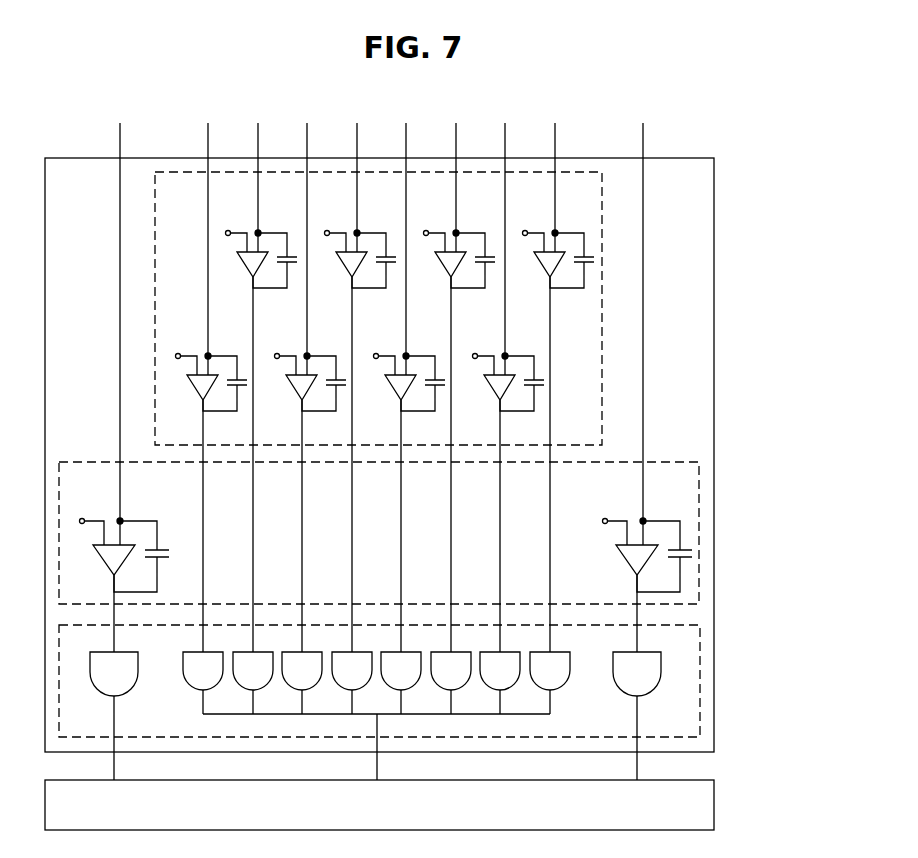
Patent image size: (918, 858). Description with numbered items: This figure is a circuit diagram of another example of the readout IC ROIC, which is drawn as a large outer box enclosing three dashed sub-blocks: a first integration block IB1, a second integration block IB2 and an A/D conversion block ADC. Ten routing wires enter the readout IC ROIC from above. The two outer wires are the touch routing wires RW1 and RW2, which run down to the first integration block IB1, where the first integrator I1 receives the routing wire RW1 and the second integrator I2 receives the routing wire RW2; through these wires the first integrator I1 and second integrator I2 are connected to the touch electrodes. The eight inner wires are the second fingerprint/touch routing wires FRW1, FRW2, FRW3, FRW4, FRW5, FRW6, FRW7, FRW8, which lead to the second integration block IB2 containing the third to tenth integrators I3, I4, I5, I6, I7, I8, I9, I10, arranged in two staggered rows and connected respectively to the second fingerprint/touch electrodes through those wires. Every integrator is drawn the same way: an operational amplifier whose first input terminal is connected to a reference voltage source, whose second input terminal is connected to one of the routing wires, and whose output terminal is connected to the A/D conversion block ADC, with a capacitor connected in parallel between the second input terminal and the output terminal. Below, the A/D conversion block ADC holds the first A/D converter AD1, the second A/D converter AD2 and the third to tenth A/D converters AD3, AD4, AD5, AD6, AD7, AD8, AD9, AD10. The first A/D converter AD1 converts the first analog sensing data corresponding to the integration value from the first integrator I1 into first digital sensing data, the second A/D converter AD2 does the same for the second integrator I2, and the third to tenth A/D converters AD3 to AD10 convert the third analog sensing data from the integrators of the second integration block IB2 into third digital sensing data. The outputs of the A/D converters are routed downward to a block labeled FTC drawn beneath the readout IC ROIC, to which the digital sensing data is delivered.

The readout IC ROIC is at (714, 198).
The first integration block IB1 is at (699, 541).
The second integration block IB2 is at (602, 372).
The A/D conversion block ADC is at (700, 688).
The fingerprint touch controller FTC is at (379, 805).
The 2-1 routing wire RW1 is at (120, 324).
The 2-1 routing wire RW2 is at (643, 324).
The second fingerprint/touch routing wire FRW1 is at (208, 239).
The second fingerprint/touch routing wire FRW2 is at (258, 177).
The second fingerprint/touch routing wire FRW3 is at (307, 239).
The second fingerprint/touch routing wire FRW4 is at (357, 177).
The second fingerprint/touch routing wire FRW5 is at (406, 239).
The second fingerprint/touch routing wire FRW6 is at (456, 177).
The second fingerprint/touch routing wire FRW7 is at (505, 239).
The second fingerprint/touch routing wire FRW8 is at (555, 177).
The first integrator I1 is at (153, 510).
The second integrator I2 is at (617, 511).
The third integrator I3 is at (196, 348).
The fourth integrator I4 is at (246, 225).
The fifth integrator I5 is at (295, 348).
The sixth integrator I6 is at (345, 225).
The seventh integrator I7 is at (394, 348).
The eighth integrator I8 is at (444, 225).
The ninth integrator I9 is at (493, 348).
The tenth integrator I10 is at (543, 225).
The first A/D converter AD1 is at (114, 674).
The second A/D converter AD2 is at (637, 674).
The third A/D converter AD3 is at (203, 671).
The fourth A/D converter AD4 is at (253, 671).
The fifth A/D converter AD5 is at (302, 671).
The sixth A/D converter AD6 is at (352, 671).
The seventh A/D converter AD7 is at (401, 671).
The eighth A/D converter AD8 is at (451, 671).
The ninth A/D converter AD9 is at (500, 671).
The tenth A/D converter AD10 is at (550, 671).